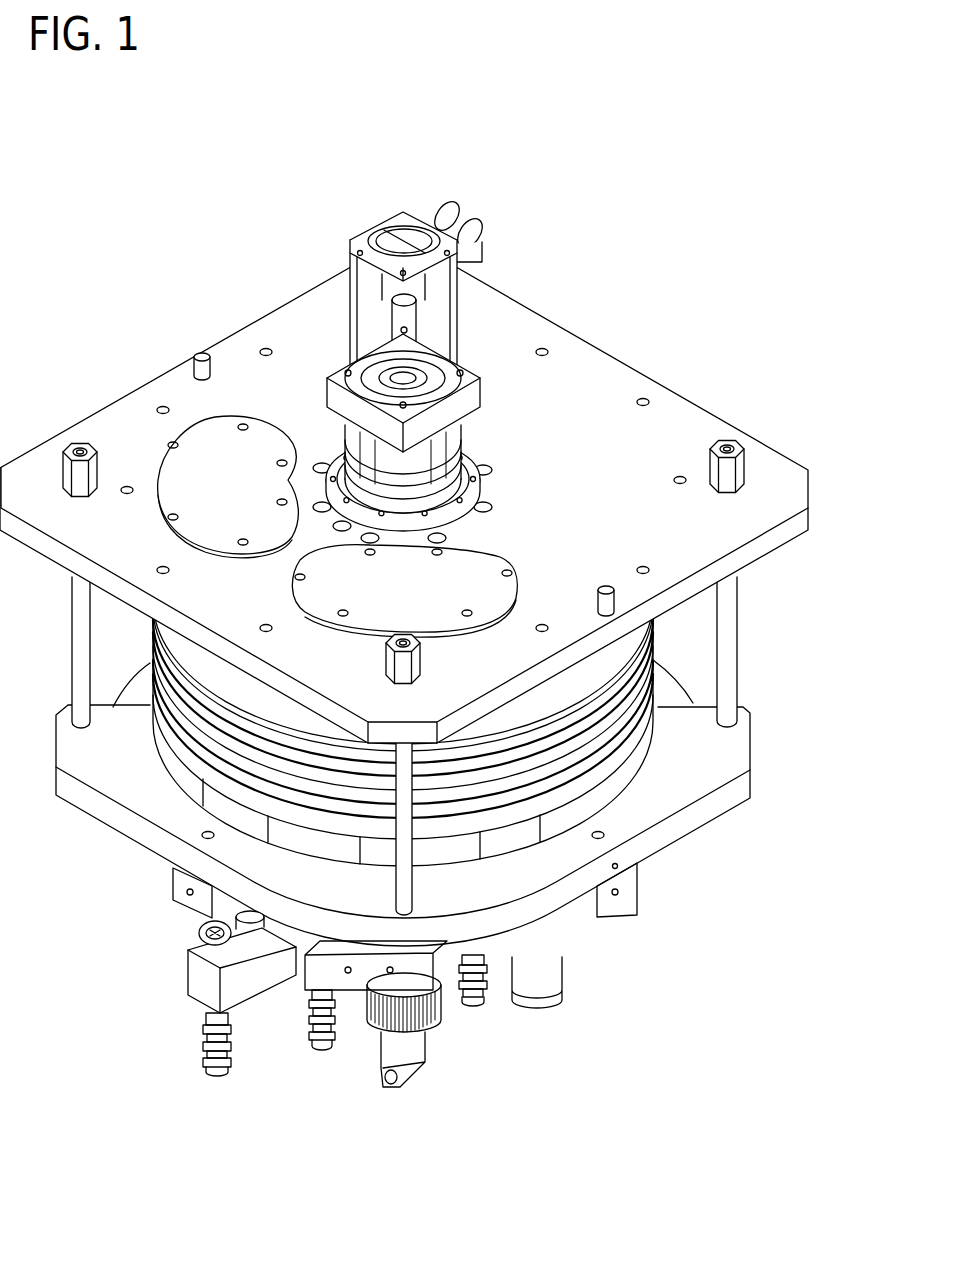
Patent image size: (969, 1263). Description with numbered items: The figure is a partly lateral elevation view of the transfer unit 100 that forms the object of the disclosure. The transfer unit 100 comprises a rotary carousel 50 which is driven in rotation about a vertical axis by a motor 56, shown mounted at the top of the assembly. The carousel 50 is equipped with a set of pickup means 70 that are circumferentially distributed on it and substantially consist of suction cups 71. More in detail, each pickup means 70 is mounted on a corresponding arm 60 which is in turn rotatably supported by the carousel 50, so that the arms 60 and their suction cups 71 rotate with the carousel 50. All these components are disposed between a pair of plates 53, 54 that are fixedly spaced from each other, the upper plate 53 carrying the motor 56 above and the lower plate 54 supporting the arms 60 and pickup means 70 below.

The transfer unit 100 is at (600, 199).
The rotary carousel 50 is at (583, 790).
The plate 53 is at (605, 397).
The plate 54 is at (692, 763).
The motor 56 is at (446, 318).
The arm 60 is at (190, 981).
The pickup means 70 is at (195, 1069).
The suction cup 71 is at (217, 1073).